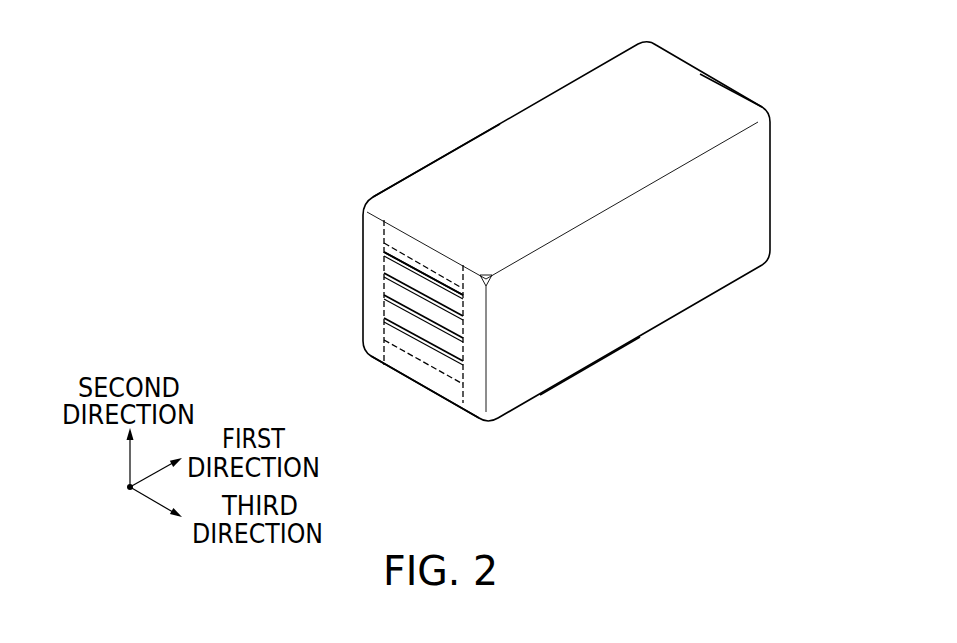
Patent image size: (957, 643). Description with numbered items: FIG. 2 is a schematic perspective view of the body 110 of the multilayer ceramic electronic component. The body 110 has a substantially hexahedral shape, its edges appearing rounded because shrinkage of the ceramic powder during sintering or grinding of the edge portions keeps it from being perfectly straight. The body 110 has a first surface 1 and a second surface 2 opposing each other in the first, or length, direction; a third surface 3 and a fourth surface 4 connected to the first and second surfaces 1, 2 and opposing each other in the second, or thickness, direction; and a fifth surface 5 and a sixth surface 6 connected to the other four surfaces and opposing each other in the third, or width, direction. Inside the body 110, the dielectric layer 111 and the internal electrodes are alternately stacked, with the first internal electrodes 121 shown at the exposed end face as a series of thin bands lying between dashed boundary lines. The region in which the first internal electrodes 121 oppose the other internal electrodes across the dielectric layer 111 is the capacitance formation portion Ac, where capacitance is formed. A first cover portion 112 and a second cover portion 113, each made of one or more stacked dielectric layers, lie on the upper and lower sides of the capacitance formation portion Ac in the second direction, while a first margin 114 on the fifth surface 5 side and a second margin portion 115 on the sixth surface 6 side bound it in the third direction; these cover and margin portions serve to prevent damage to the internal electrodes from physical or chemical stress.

The body 110 is at (392, 34).
The first surface 1 is at (402, 388).
The second surface 2 is at (740, 76).
The third surface 3 is at (560, 124).
The fourth surface 4 is at (593, 380).
The fifth surface 5 is at (408, 168).
The sixth surface 6 is at (650, 298).
The dielectric layer 111 is at (386, 297).
The first cover portion 112 is at (402, 238).
The second cover portion 113 is at (398, 364).
The first margin 114 is at (368, 338).
The second margin portion 115 is at (477, 398).
The first internal electrode 121 is at (400, 264).
The capacitance formation portion Ac is at (470, 352).